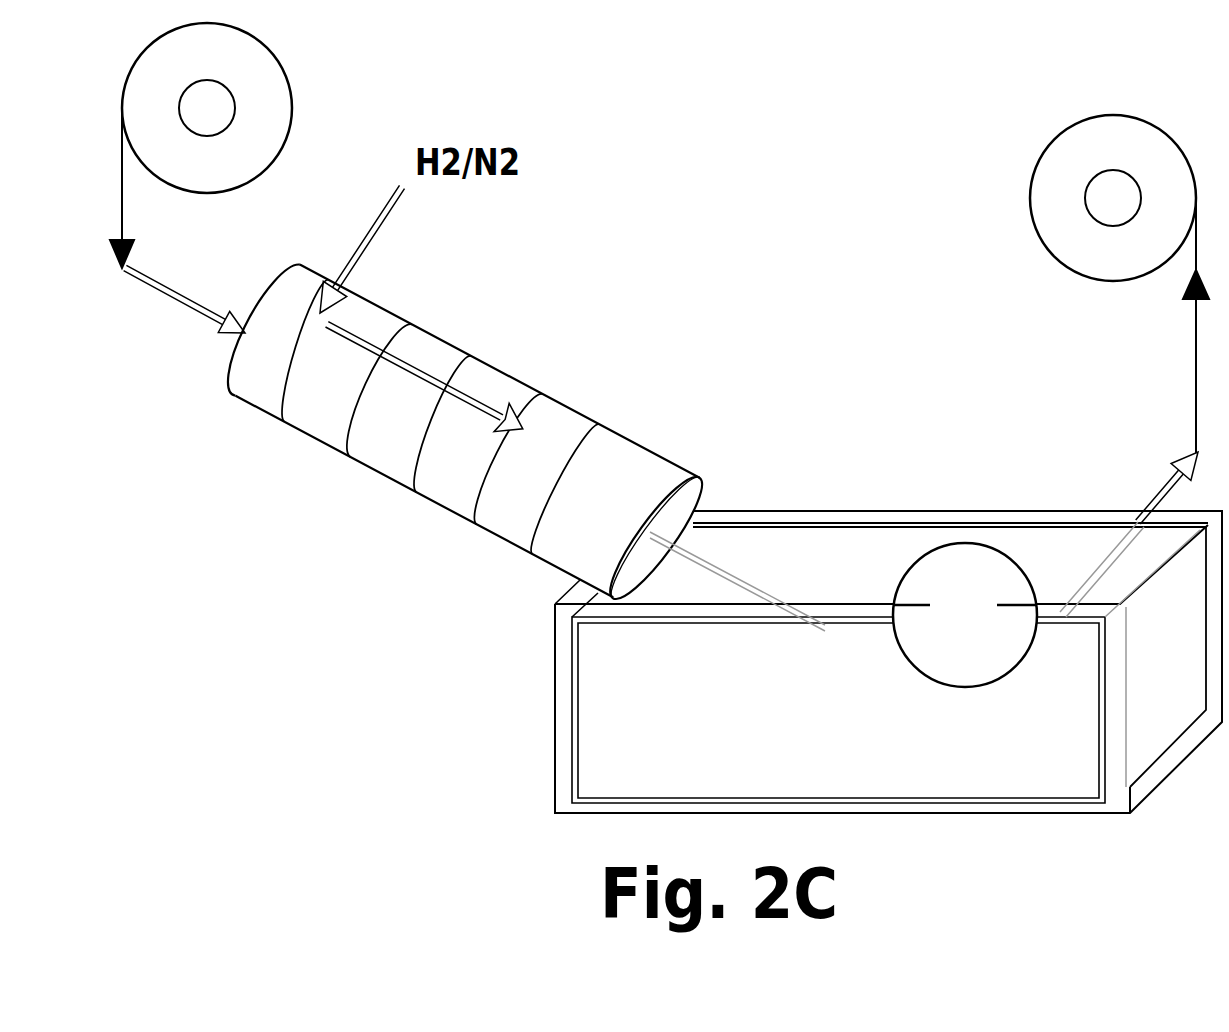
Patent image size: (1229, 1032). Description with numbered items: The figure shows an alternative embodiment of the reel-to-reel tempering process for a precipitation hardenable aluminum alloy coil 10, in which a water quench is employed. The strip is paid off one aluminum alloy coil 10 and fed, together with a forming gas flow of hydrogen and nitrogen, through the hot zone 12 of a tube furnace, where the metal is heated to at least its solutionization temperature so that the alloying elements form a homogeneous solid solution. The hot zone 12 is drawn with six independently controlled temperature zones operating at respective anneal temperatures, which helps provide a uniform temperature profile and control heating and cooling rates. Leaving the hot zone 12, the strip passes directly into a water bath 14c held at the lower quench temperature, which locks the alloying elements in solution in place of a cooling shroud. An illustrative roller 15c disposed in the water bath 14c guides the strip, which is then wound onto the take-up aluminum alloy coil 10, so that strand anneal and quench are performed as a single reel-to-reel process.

The aluminum alloy coil 10 is at (275, 53).
The hot zone 12 is at (522, 387).
The water bath 14c is at (835, 538).
The roller 15c is at (993, 637).